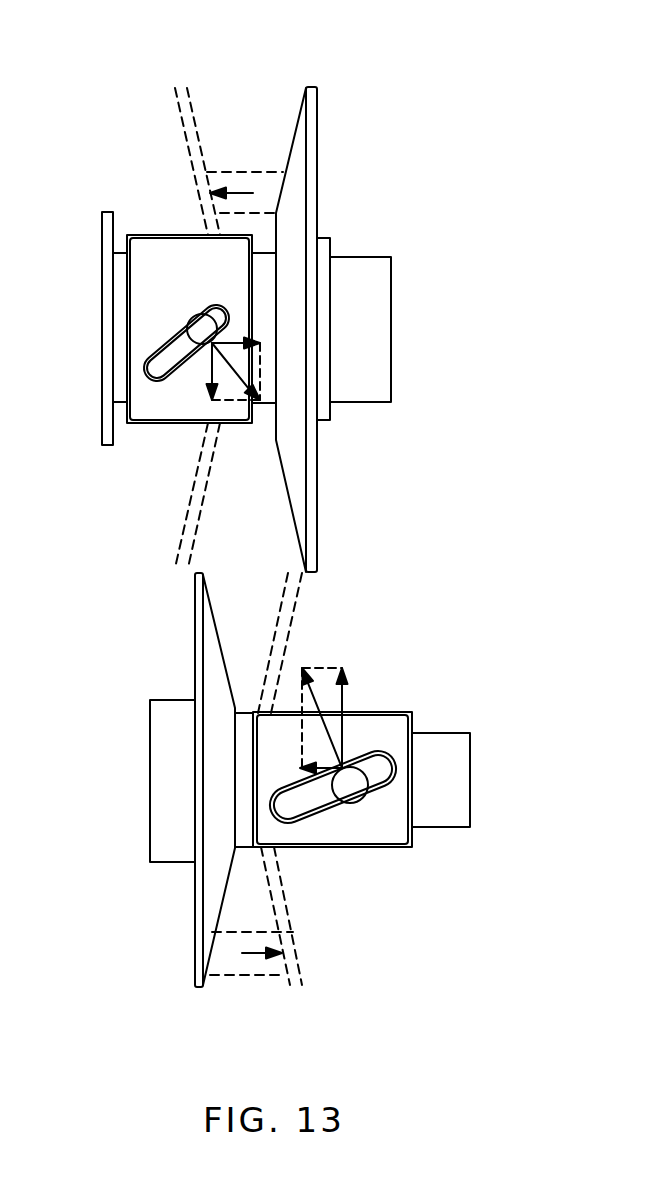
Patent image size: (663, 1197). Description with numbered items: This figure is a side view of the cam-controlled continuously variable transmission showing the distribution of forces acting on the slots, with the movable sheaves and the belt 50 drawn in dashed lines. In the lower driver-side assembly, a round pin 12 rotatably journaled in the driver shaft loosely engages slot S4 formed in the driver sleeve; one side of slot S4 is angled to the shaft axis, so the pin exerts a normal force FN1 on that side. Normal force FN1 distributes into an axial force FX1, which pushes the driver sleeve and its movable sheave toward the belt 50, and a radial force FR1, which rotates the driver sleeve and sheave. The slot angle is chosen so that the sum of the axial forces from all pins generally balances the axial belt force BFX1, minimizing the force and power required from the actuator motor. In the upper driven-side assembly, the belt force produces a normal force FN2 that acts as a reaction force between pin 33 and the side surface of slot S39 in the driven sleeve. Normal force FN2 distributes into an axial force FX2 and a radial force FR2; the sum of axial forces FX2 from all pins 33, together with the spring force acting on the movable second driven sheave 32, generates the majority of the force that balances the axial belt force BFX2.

The belt 50 is at (262, 172).
The movable second driven sheave 32 is at (178, 100).
The axial belt force BFX2 is at (213, 193).
The pin 33 is at (186, 326).
The slot S39 is at (153, 350).
The axial force FX2 is at (253, 341).
The radial force FR2 is at (205, 382).
The normal force FN2 is at (247, 387).
The round pin 12 is at (362, 793).
The slot S4 is at (320, 812).
The radial force FR1 is at (345, 700).
The normal force FN1 is at (312, 698).
The axial force FX1 is at (304, 772).
The axial belt force BFX1 is at (250, 957).